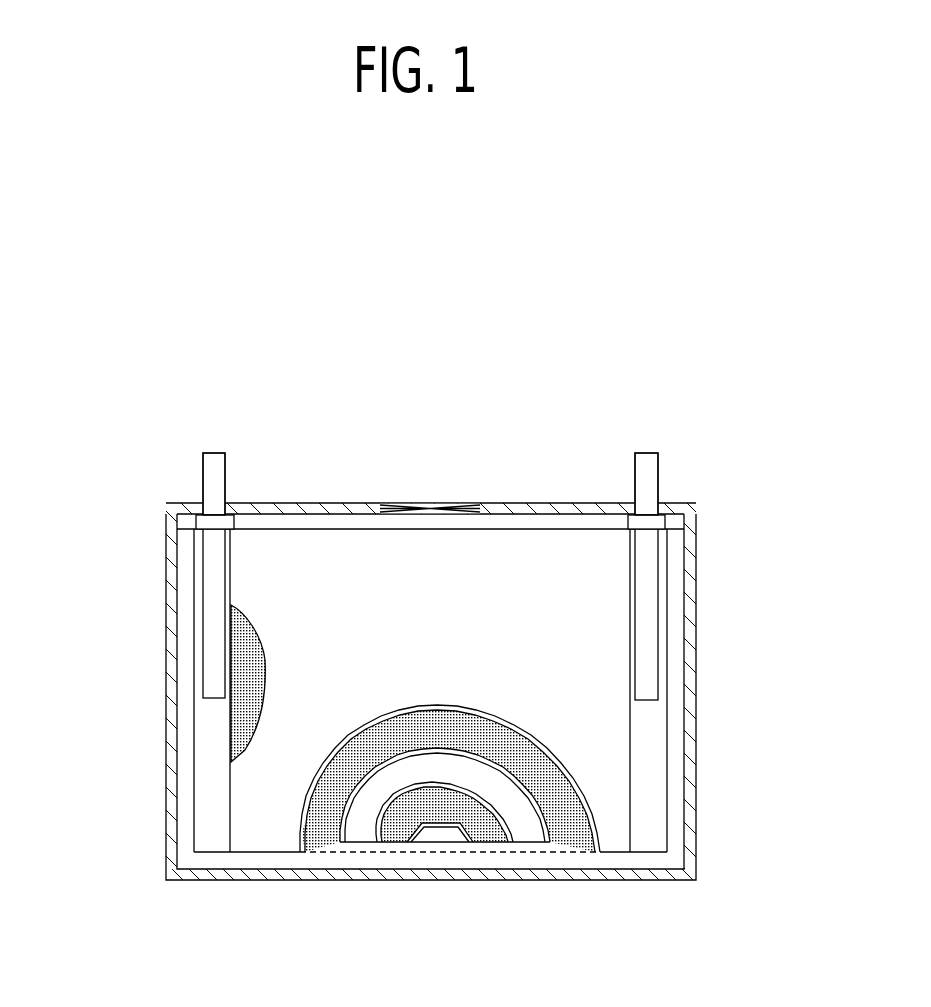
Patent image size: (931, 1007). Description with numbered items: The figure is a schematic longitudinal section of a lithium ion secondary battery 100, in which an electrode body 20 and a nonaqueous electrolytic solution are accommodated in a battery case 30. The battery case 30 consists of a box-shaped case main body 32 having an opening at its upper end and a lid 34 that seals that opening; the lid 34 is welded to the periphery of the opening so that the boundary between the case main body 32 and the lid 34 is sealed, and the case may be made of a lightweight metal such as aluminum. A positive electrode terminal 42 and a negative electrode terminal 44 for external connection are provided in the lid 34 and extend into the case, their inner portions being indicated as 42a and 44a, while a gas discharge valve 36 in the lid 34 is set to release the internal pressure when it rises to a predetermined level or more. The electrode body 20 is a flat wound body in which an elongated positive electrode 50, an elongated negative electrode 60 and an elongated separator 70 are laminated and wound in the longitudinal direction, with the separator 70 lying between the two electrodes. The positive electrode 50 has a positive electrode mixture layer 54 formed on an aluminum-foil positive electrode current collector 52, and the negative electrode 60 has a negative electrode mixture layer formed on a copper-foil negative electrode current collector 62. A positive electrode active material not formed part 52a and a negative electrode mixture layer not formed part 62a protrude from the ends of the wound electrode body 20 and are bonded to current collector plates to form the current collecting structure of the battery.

The lithium ion secondary battery 100 is at (698, 466).
The electrode body 20 is at (322, 558).
The battery case 30 is at (699, 608).
The case main body 32 is at (696, 857).
The lid 34 is at (598, 503).
The gas discharge valve 36 is at (432, 503).
The positive electrode terminal 42 is at (214, 452).
The first terminal inner portion 42a is at (217, 593).
The negative electrode terminal 44 is at (648, 452).
The second terminal inner portion 44a is at (647, 560).
The positive electrode 50 is at (322, 838).
The positive electrode current collector 52 is at (195, 753).
The positive electrode active material not formed part 52a is at (210, 827).
The positive electrode mixture layer 54 is at (252, 658).
The negative electrode 60 is at (397, 832).
The negative electrode current collector 62 is at (668, 712).
The negative electrode mixture layer not formed part 62a is at (652, 755).
The separator 70 is at (268, 783).